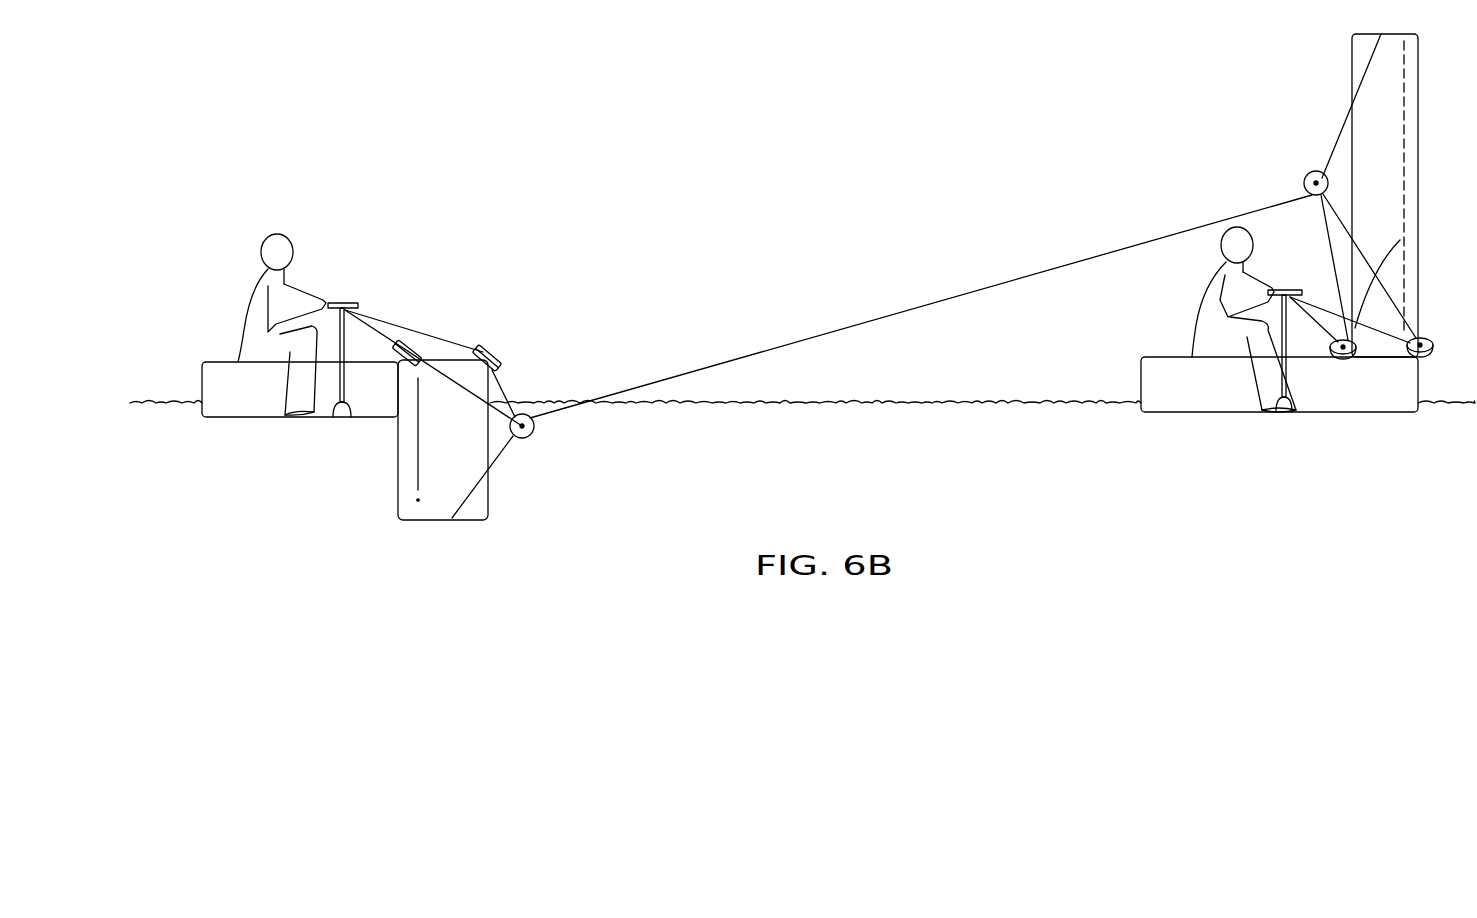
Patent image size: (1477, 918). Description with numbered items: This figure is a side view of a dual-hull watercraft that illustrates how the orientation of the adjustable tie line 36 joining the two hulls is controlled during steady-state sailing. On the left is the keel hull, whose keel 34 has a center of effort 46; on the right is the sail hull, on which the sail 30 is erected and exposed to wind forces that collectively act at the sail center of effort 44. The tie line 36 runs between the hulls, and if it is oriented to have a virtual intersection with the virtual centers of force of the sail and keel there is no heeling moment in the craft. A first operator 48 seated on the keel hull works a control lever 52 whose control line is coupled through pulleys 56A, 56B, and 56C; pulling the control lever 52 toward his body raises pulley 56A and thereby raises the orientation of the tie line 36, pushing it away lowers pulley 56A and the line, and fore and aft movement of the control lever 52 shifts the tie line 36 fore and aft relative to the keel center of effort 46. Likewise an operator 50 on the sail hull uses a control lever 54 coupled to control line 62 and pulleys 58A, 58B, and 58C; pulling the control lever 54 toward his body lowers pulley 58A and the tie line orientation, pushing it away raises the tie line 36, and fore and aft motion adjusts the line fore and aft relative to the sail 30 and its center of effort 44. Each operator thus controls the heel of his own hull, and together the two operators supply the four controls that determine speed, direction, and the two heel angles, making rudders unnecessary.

The sail 30 is at (1358, 56).
The keel 34 is at (480, 498).
The tie line 36 is at (914, 305).
The sail center of effort 44 is at (1384, 184).
The keel center of effort 46 is at (452, 445).
The first operator 48 is at (247, 302).
The operator 50 is at (1195, 305).
The control lever 52 is at (348, 338).
The control lever 54 is at (1293, 340).
The pulley 56A is at (530, 440).
The pulley 56B is at (492, 354).
The pulley 56C is at (406, 350).
The pulley 58A is at (1302, 176).
The pulley 58B is at (1352, 358).
The pulley 58C is at (1430, 338).
The control line 62 is at (1365, 262).